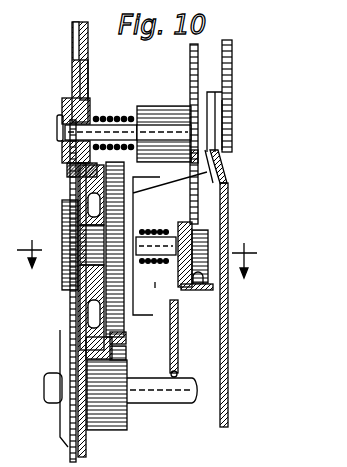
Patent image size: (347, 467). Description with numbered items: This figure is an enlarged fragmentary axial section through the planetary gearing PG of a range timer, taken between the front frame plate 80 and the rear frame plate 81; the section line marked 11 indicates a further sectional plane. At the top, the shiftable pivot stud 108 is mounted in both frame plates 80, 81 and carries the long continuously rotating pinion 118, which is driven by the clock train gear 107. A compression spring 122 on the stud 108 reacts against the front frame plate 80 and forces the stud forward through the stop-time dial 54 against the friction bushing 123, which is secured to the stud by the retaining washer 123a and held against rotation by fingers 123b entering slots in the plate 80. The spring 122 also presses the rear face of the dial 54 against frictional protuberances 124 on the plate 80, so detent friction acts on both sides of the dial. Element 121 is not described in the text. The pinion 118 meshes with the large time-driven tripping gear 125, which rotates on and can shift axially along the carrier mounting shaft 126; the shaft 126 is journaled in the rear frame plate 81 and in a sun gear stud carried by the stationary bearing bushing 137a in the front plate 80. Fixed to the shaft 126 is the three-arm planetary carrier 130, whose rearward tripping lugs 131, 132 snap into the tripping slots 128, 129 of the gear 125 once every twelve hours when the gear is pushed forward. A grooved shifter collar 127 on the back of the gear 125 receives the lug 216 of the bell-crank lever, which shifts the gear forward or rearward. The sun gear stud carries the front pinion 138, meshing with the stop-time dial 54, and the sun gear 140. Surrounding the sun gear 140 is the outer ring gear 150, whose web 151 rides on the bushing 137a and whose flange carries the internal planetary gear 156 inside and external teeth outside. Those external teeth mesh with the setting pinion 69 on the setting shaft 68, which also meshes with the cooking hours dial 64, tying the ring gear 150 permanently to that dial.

The front frame plate 80 is at (85, 21).
The stop-time dial 54 is at (72, 67).
The friction bushing 123 is at (72, 82).
The retaining washer 123a is at (58, 126).
The fingers 123b is at (68, 100).
The pivot stud 108 is at (130, 114).
The compression spring 122 is at (104, 114).
The frictional protuberances 124 is at (133, 110).
The pinion 118 is at (160, 108).
The shaft 121 is at (190, 90).
The rear frame plate 81 is at (236, 60).
The clock train gear 107 is at (204, 62).
The tripping lug 132 is at (231, 131).
The planetary gear carrier 130 is at (229, 159).
The tripping slot 128 is at (229, 177).
The shifter collar 127 is at (229, 195).
The planetary gearing PG is at (68, 168).
The front pinion 138 is at (64, 210).
The internal planetary gear 156 is at (90, 200).
The bearing bushing 137a is at (64, 290).
The sun gear 140 is at (68, 307).
The web portion 151 is at (64, 328).
The planetary gear carrier mounting shaft 126 is at (155, 227).
The tripping lug 131 is at (150, 316).
The tripping slot 129 is at (180, 330).
The inwardly projecting lug 216 is at (197, 291).
The time-driven tripping gear 125 is at (179, 357).
The setting pinion 69 is at (128, 412).
The outer internal ring gear 150 is at (128, 355).
The setting shaft 68 is at (45, 404).
The cooking hours dial 64 is at (68, 453).
The section line 11 is at (137, 251).